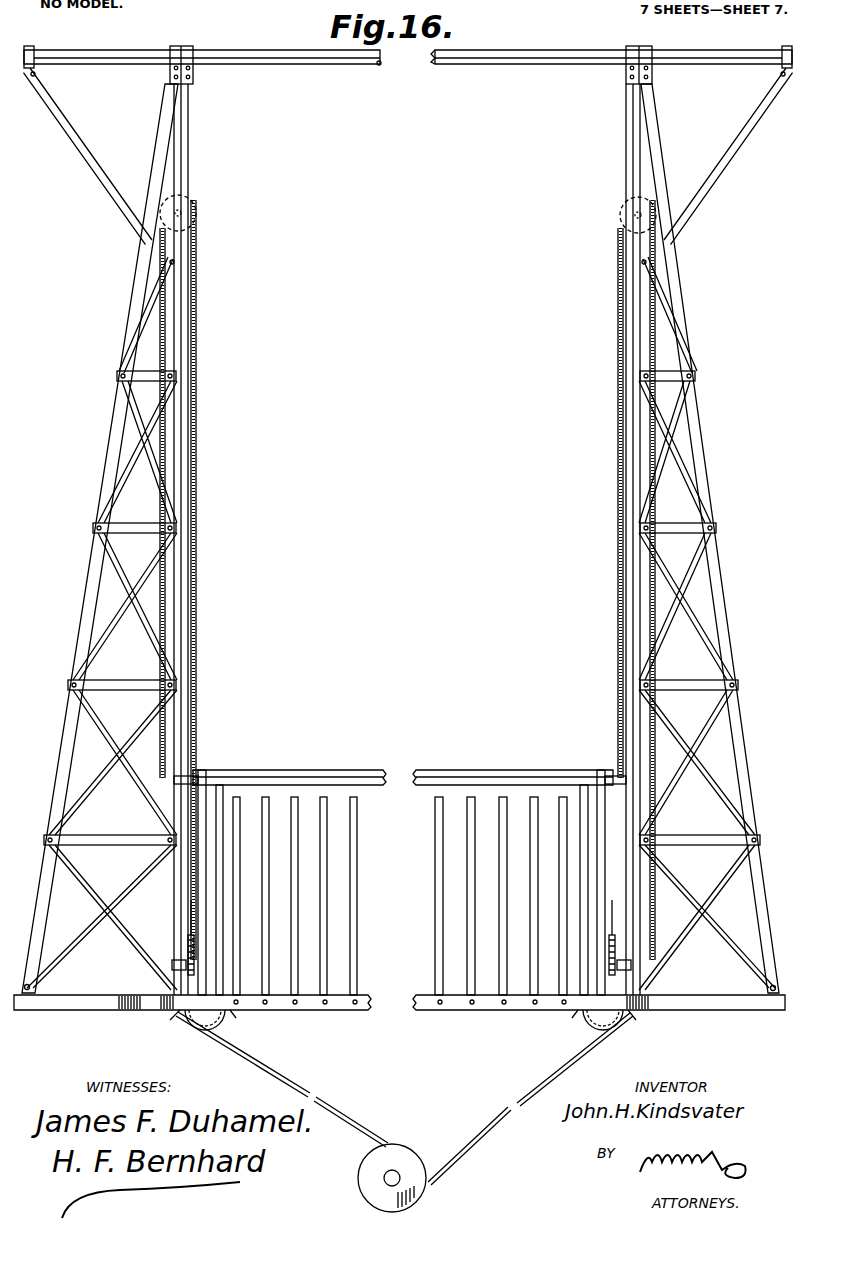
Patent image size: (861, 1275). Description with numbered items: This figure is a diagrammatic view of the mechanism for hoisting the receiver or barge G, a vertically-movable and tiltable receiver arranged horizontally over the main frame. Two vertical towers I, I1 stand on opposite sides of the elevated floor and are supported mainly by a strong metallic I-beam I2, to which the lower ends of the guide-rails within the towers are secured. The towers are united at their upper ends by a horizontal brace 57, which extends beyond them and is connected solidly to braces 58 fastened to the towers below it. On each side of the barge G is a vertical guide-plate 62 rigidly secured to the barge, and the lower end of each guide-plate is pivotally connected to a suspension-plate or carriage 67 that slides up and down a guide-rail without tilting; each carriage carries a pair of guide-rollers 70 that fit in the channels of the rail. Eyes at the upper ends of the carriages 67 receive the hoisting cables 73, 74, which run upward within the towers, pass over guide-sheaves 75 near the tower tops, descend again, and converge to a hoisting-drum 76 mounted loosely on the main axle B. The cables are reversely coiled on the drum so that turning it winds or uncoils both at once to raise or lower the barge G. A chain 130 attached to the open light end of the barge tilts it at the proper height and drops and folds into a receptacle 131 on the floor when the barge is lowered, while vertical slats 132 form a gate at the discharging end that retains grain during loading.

The horizontal brace 57 is at (345, 60).
The braces 58 is at (100, 155).
The guide-sheaves 75 is at (196, 206).
The hoisting cable 73 is at (198, 571).
The hoisting cable 74 is at (619, 600).
The vertical guide-plate 62 is at (200, 890).
The suspension-plate or carriage 67 is at (190, 922).
The guide-rollers 70 is at (178, 964).
The vertical slats 132 is at (357, 940).
The receptacles 131 is at (224, 1018).
The chain 130 is at (196, 1026).
The hoisting-drum 76 is at (406, 1162).
The vertical tower I is at (106, 455).
The vertical tower I1 is at (706, 465).
The I-beam I2 is at (82, 1018).
The receiver or barge G is at (381, 770).
The main axle B is at (385, 1180).